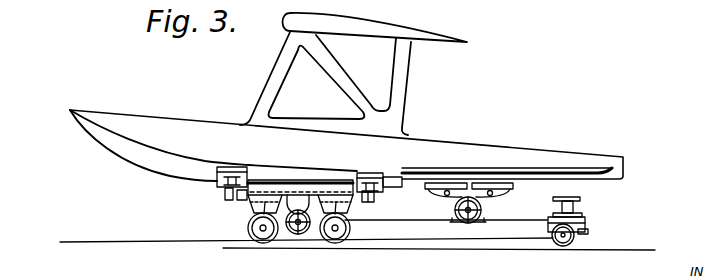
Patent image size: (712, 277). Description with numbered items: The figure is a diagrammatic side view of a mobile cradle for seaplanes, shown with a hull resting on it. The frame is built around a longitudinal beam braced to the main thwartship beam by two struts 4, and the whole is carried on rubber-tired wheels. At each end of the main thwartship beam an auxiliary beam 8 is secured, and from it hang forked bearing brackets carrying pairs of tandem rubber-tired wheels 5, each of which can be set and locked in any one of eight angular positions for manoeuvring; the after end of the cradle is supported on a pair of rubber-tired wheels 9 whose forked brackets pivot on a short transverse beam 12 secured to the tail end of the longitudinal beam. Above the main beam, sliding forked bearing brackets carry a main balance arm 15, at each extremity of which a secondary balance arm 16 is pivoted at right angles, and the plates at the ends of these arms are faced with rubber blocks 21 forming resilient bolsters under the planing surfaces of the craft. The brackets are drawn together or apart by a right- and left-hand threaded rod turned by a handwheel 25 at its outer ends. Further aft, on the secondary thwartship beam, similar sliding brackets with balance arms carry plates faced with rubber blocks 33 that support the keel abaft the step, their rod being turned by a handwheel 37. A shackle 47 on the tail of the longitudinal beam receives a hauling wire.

The rubber blocks 21 is at (235, 167).
The auxiliary beam 8 is at (300, 181).
The rubber blocks 33 is at (500, 184).
The secondary balance arm 16 is at (226, 194).
The main balance arm 15 is at (236, 201).
The rubber-tired wheels 5 is at (254, 233).
The handwheel 25 is at (299, 234).
The struts 4 is at (423, 227).
The handwheel 37 is at (469, 223).
The short transverse beam 12 is at (580, 207).
The shackle 47 is at (588, 232).
The rubber-tired wheels 9 is at (577, 243).